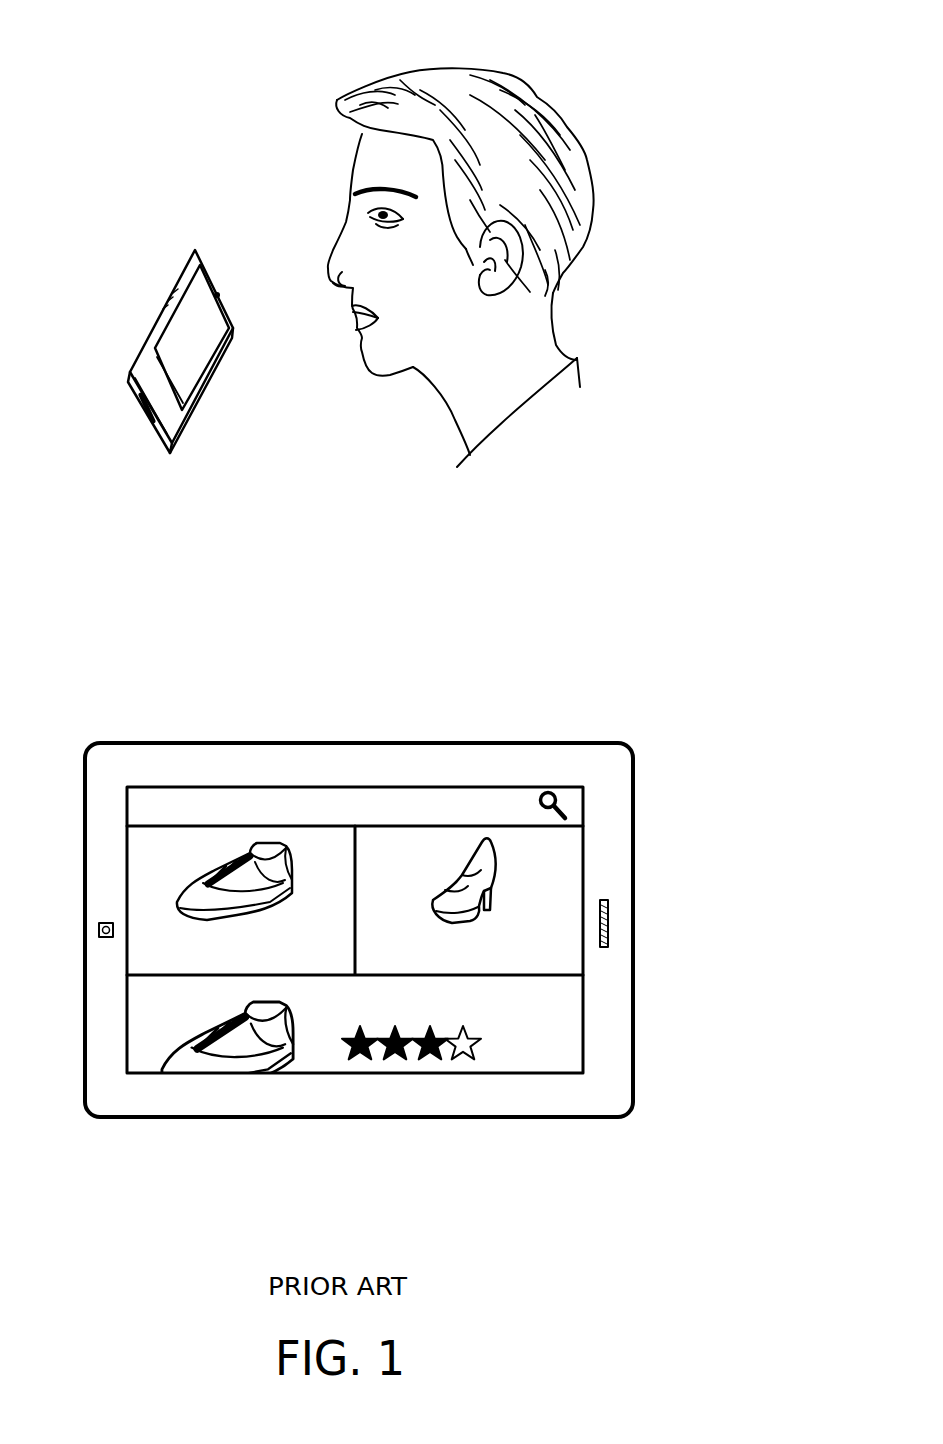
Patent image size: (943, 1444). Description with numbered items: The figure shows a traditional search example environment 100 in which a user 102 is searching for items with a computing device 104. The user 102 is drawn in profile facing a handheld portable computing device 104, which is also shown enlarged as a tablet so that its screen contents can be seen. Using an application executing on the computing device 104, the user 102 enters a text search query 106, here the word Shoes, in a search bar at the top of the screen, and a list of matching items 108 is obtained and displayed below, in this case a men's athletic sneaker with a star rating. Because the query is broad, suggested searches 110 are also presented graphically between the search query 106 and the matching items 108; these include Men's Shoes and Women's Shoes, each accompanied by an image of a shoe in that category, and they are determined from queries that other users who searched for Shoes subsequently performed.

The search example environment 100 is at (741, 103).
The user 102 is at (322, 202).
The computing device 104 is at (173, 281).
The search query 106 is at (585, 798).
The matching items 108 is at (585, 1008).
The suggested searches 110 is at (585, 868).